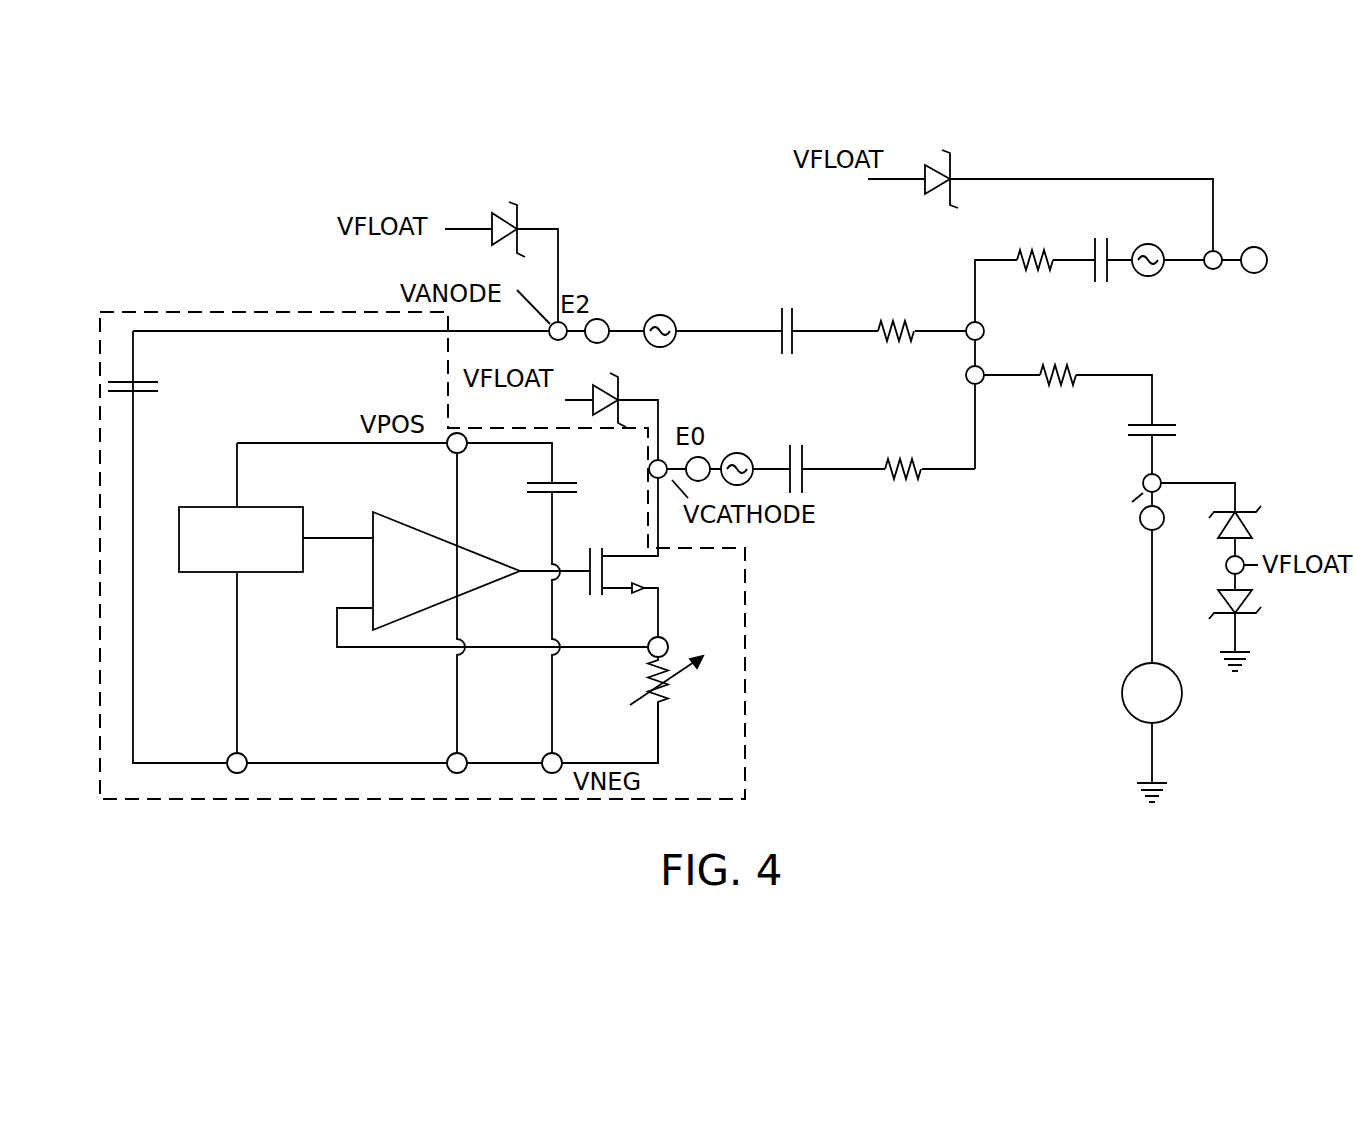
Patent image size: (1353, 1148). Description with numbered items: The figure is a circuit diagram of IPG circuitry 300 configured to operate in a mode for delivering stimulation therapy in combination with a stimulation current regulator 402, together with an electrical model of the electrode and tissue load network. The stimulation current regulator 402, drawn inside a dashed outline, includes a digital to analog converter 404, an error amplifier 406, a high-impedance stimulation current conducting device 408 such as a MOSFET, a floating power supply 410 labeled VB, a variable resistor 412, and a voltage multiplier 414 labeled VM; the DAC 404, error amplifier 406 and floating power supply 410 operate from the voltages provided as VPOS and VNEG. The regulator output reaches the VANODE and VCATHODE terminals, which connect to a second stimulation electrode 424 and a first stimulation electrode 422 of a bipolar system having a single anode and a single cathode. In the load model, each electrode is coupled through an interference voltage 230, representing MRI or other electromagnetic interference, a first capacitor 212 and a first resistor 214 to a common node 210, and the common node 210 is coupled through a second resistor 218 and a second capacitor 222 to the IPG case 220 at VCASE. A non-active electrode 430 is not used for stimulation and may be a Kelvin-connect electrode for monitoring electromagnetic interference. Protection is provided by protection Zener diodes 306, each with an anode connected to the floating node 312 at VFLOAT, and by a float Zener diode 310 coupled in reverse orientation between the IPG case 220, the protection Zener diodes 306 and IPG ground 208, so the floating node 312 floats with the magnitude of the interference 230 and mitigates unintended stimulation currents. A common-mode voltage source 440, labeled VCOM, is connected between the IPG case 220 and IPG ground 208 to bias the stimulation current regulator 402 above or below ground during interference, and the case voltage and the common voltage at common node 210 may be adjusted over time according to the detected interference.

The IPG circuitry 300 is at (758, 212).
The protection Zener diode 306 is at (497, 212).
The floating node 312 is at (470, 229).
The second stimulation electrode 424 is at (602, 319).
The interference voltage 230 is at (660, 315).
The first capacitor 212 is at (792, 310).
The first resistor 214 is at (903, 316).
The non-active electrode 430 is at (1252, 247).
The voltage multiplier 414 is at (118, 391).
The digital to analog converter 404 is at (262, 507).
The error amplifier 406 is at (410, 520).
The floating power supply 410 is at (578, 486).
The high-impedance stimulation current conducting device 408 is at (606, 566).
The variable resistor 412 is at (672, 692).
The first stimulation electrode 422 is at (708, 457).
The common node 210 is at (984, 382).
The second resistor 218 is at (1062, 388).
The second capacitor 222 is at (1158, 425).
The IPG case 220 is at (1140, 527).
The float Zener diode 310 is at (1222, 597).
The common-mode voltage source 440 is at (1122, 698).
The IPG ground 208 is at (1165, 783).
The stimulation current regulator 402 is at (253, 822).